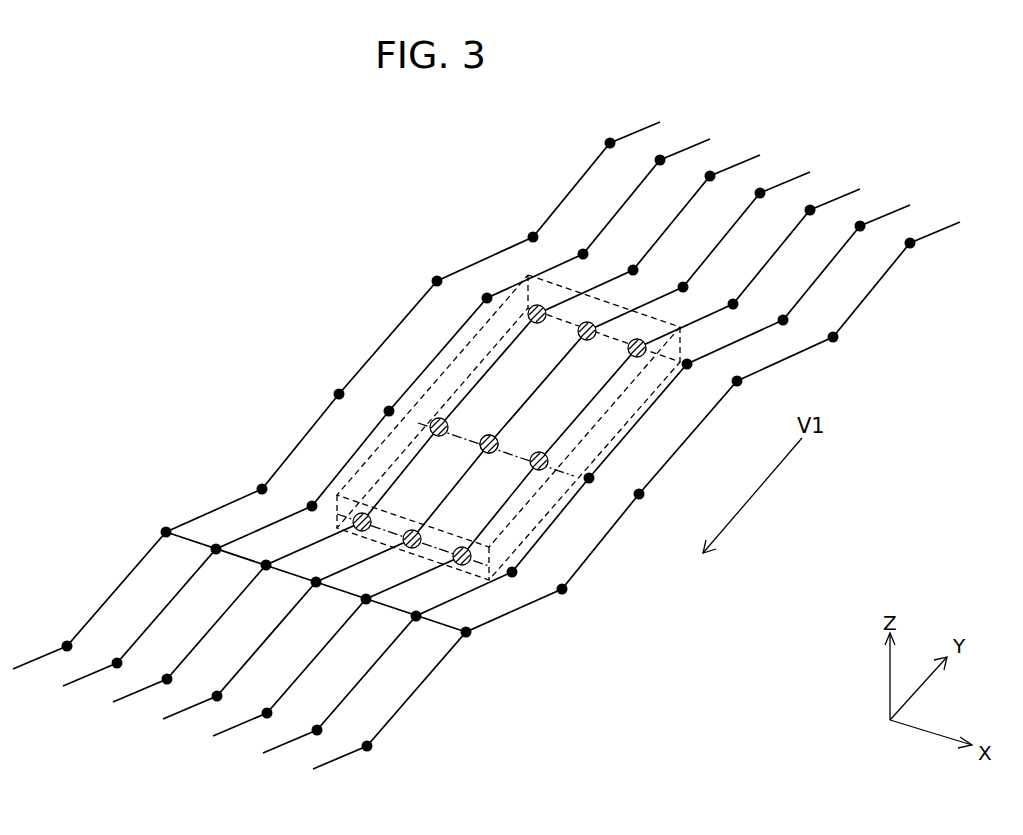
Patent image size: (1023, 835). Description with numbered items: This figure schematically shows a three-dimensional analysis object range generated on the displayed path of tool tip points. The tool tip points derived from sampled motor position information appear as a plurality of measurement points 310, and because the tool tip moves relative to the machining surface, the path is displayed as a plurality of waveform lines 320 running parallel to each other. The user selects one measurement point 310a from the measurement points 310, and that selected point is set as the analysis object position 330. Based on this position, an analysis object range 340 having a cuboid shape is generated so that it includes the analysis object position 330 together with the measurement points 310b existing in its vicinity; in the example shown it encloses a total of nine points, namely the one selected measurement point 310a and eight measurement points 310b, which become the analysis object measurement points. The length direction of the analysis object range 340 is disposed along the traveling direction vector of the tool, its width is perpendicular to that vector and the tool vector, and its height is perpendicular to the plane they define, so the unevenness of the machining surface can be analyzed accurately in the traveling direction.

The measurement points 310 is at (118, 663).
The measurement point 310a is at (489, 444).
The measurement points 310b is at (637, 348).
The waveform lines 320 is at (333, 533).
The analysis object position 330 is at (493, 306).
The analysis object range 340 is at (437, 375).